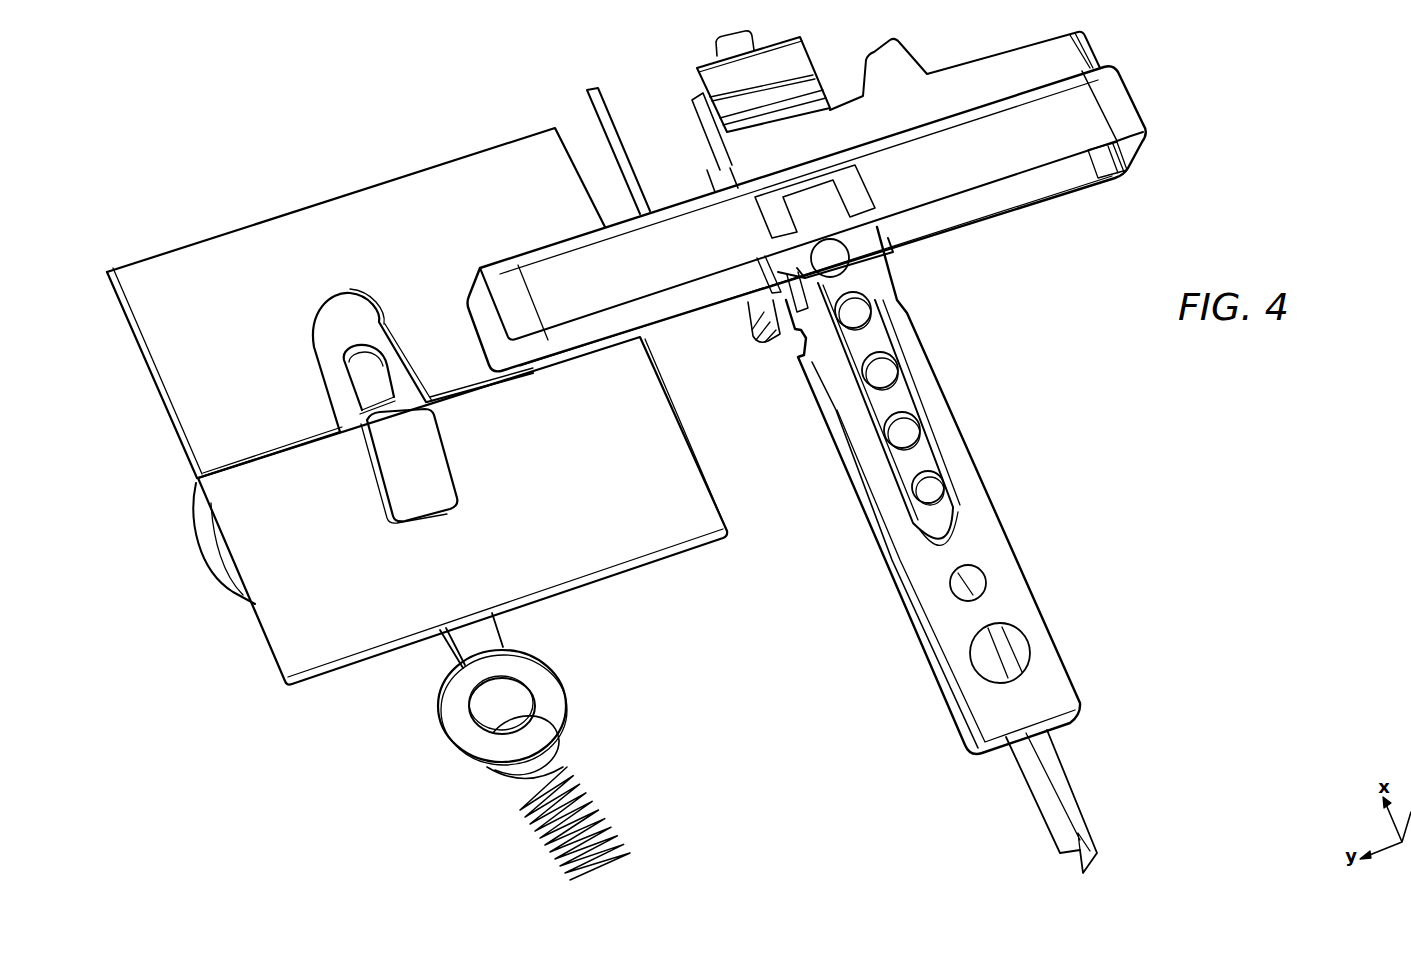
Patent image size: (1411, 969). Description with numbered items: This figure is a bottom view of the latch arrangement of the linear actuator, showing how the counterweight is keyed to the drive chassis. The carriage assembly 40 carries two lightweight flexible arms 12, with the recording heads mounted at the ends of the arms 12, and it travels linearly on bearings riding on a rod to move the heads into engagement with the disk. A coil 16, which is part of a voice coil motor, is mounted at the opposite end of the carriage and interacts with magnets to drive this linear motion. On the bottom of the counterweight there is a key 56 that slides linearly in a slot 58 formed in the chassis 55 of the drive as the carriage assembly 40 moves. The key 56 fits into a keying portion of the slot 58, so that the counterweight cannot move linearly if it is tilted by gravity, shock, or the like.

The flexible arm 12 is at (1078, 793).
The coil 16 is at (1051, 127).
The carriage assembly 40 is at (1012, 533).
The chassis 55 is at (150, 301).
The key 56 is at (423, 477).
The slot 58 is at (358, 370).